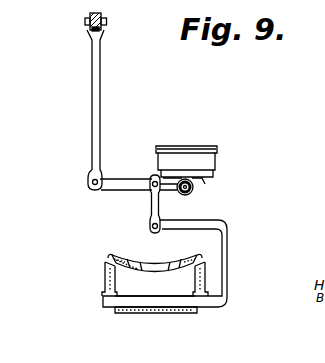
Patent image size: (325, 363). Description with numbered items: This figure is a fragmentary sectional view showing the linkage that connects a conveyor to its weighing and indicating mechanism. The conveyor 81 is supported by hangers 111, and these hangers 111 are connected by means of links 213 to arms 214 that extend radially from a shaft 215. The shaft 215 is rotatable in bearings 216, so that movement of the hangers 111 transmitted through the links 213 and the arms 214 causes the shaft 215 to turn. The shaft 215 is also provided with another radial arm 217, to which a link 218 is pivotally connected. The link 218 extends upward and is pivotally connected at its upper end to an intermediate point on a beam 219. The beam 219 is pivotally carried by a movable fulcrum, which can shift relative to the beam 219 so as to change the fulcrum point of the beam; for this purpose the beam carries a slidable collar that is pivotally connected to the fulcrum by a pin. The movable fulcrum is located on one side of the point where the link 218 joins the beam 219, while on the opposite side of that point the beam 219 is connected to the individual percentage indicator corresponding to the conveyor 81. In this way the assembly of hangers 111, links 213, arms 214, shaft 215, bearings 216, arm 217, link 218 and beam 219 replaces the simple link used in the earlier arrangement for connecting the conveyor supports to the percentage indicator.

The beam 219 is at (88, 28).
The link 218 is at (91, 105).
The radial arm 217 is at (127, 181).
The links 213 is at (152, 205).
The arms 214 is at (170, 190).
The shaft 215 is at (196, 190).
The bearings 216 is at (199, 179).
The hangers 111 is at (223, 247).
The conveyor 81 is at (102, 263).